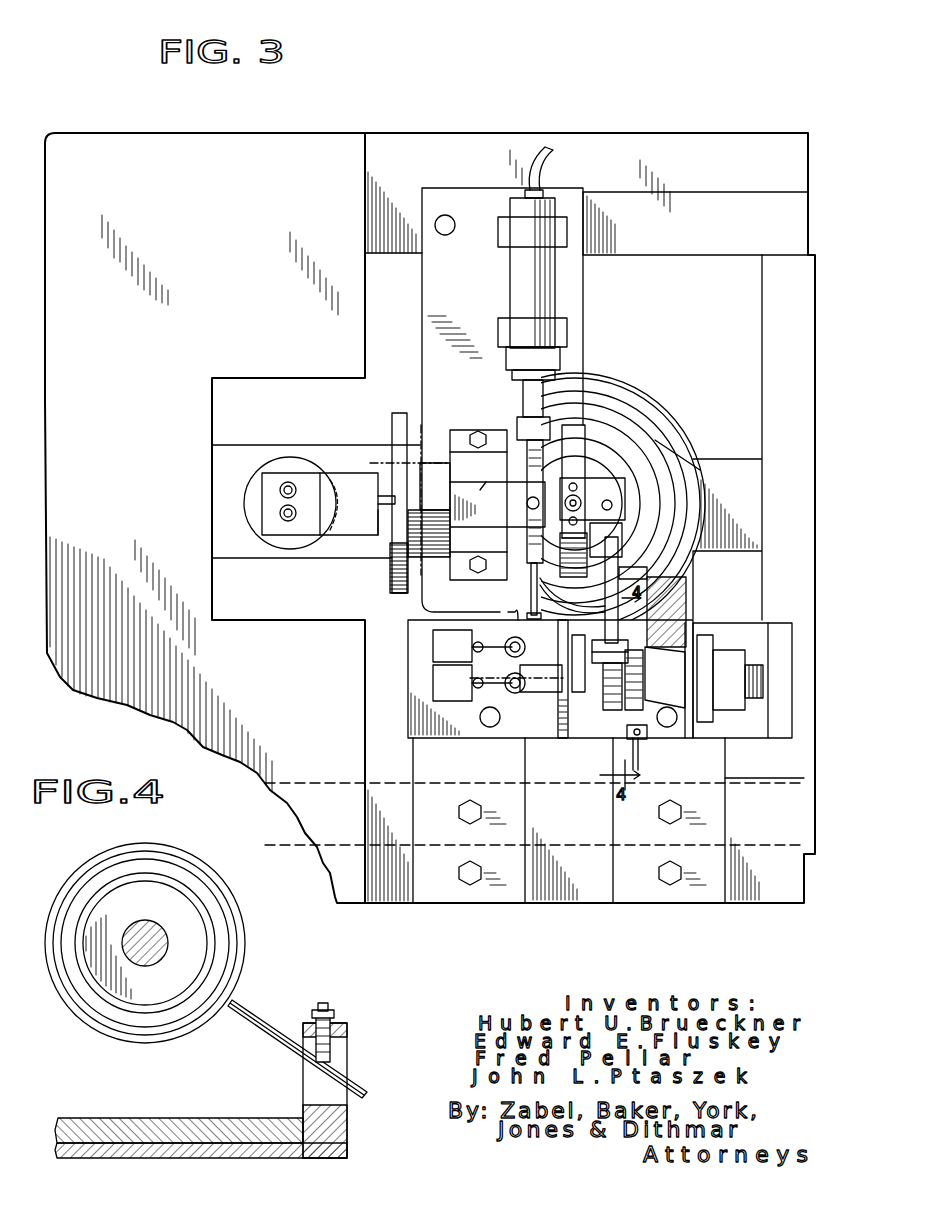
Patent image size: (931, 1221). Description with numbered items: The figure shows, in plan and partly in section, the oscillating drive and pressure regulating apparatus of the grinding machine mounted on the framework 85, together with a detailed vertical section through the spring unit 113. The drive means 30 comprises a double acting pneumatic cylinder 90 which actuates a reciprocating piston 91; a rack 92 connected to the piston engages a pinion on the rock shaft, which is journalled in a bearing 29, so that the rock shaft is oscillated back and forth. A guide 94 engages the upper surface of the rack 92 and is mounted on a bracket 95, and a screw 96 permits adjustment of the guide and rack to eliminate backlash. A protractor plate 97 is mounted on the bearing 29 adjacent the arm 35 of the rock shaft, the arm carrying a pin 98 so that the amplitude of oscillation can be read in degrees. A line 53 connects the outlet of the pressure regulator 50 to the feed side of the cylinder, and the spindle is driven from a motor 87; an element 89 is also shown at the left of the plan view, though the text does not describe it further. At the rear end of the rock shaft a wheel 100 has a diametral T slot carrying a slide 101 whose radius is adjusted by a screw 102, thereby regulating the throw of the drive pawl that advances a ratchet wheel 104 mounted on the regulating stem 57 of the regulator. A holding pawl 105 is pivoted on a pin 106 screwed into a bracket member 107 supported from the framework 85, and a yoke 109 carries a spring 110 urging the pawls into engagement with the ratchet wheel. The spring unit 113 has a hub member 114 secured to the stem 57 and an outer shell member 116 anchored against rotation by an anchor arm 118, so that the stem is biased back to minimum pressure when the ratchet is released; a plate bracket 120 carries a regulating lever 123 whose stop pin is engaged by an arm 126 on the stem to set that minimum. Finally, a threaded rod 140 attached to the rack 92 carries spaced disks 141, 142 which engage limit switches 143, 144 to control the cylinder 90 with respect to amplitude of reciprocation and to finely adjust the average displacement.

In FIG. 3, the drive means 30 is at (494, 287).
In FIG. 3, the pneumatic cylinder 90 is at (548, 298).
In FIG. 3, the piston 91 is at (545, 398).
In FIG. 3, the motor 87 is at (628, 420).
In FIG. 3, the screw 102 is at (655, 440).
In FIG. 3, the wheel 100 is at (574, 425).
In FIG. 3, the slide 101 is at (615, 500).
In FIG. 3, the pin 106 is at (598, 593).
In FIG. 3, the holding pawl 105 is at (686, 596).
In FIG. 3, the bracket member 107 is at (686, 584).
In FIG. 3, the yoke 109 is at (686, 606).
In FIG. 4, the yoke 109 is at (332, 1024).
In FIG. 3, the regulating lever 123 is at (572, 597).
In FIG. 3, the bracket 95 is at (468, 430).
In FIG. 3, the guide 94 is at (474, 476).
In FIG. 3, the screw 96 is at (526, 501).
In FIG. 3, the rack 92 is at (468, 521).
In FIG. 3, the bearing 29 is at (423, 460).
In FIG. 3, the protractor plate 97 is at (392, 420).
In FIG. 3, the pin 98 is at (385, 556).
In FIG. 3, the motor 89 is at (252, 478).
In FIG. 3, the line 53 is at (278, 512).
In FIG. 3, the arm 35 is at (375, 540).
In FIG. 3, the threaded rod 140 is at (527, 580).
In FIG. 3, the disk 141 is at (503, 606).
In FIG. 3, the limit switch 143 is at (430, 650).
In FIG. 3, the limit switch 144 is at (430, 690).
In FIG. 3, the disk 142 is at (520, 700).
In FIG. 3, the plate bracket 120 is at (564, 740).
In FIG. 3, the arm 126 is at (578, 700).
In FIG. 3, the ratchet wheel 104 is at (600, 720).
In FIG. 3, the regulating stem 57 is at (590, 740).
In FIG. 4, the regulating stem 57 is at (165, 905).
In FIG. 3, the spring unit 113 is at (640, 674).
In FIG. 4, the spring unit 113 is at (210, 854).
In FIG. 3, the spring 110 is at (665, 680).
In FIG. 3, the pressure regulator 50 is at (663, 738).
In FIG. 3, the anchor arm 118 is at (642, 775).
In FIG. 4, the anchor arm 118 is at (240, 1006).
In FIG. 3, the framework 85 is at (592, 880).
In FIG. 4, the framework 85 is at (163, 1118).
In FIG. 4, the outer shell member 116 is at (220, 886).
In FIG. 4, the hub member 114 is at (115, 990).